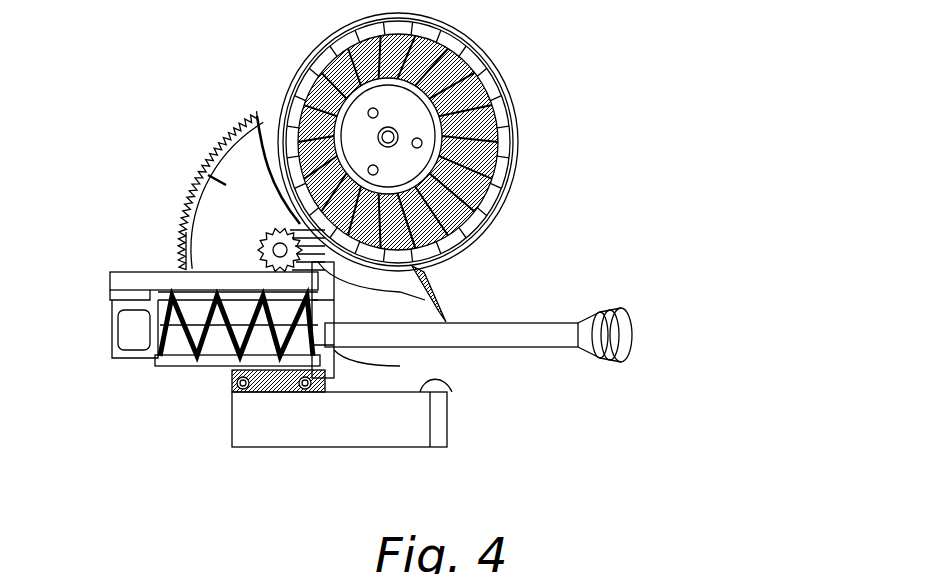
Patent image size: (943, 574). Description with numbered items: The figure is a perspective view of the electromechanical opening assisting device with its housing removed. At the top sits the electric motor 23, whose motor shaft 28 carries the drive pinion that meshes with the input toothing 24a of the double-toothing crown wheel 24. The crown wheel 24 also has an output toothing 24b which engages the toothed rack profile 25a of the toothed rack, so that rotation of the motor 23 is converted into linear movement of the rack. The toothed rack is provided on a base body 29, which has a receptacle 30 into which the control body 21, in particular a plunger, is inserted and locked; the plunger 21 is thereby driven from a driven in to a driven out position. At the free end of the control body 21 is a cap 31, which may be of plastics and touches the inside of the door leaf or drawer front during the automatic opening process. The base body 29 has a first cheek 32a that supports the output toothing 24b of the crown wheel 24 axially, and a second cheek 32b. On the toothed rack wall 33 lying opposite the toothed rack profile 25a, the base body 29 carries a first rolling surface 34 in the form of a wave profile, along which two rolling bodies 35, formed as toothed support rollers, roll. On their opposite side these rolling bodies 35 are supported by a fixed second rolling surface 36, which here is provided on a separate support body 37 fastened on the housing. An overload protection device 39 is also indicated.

The control body 21 is at (548, 332).
The electric motor 23 is at (508, 108).
The double-toothing crown wheel 24 is at (260, 113).
The input toothing 24a is at (183, 240).
The output toothing 24b is at (240, 140).
The toothed rack profile 25a is at (323, 282).
The motor shaft 28 is at (390, 135).
The base body 29 is at (150, 366).
The receptacle 30 is at (337, 347).
The cap 31 is at (615, 335).
The first cheek 32a is at (122, 282).
The second cheek 32b is at (200, 183).
The toothed rack wall 33 is at (348, 370).
The first rolling surface 34 is at (205, 370).
The rolling body 35 is at (305, 394).
The second rolling surface 36 is at (450, 390).
The support body 37 is at (440, 433).
The overload protection device 39 is at (83, 560).